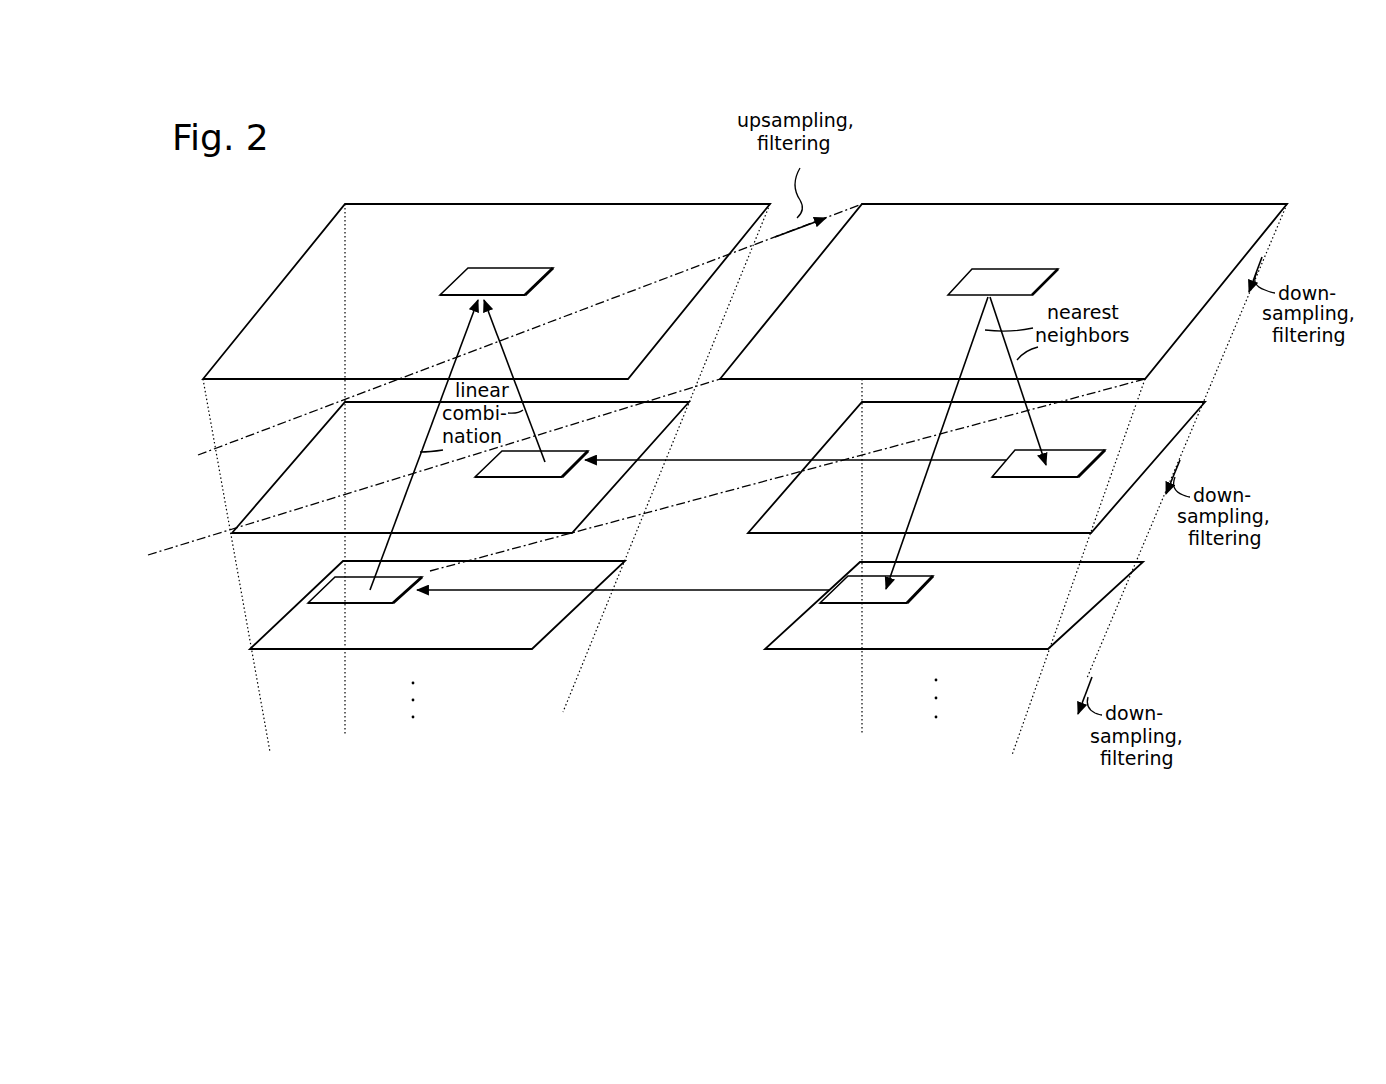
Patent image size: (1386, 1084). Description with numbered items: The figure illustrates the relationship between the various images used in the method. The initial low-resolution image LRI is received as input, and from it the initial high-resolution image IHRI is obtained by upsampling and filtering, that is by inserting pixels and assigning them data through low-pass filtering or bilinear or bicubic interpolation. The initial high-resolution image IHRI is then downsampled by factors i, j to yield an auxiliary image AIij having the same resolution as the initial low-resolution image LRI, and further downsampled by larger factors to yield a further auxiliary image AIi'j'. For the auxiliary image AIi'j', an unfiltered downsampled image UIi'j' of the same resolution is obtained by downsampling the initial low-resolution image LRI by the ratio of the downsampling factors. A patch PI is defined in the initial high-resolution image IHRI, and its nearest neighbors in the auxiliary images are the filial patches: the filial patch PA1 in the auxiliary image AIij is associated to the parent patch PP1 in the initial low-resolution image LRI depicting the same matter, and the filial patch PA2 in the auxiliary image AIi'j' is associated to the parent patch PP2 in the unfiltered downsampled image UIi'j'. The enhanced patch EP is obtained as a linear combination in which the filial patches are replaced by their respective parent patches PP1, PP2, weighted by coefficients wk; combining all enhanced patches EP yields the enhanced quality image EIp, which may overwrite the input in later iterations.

The enhanced quality image EIp is at (413, 217).
The initial high-resolution image IHRI is at (1152, 222).
The initial low-resolution image LRI is at (305, 490).
The enhanced patch EP is at (488, 272).
The patch in initial high-resolution image PI is at (997, 280).
The parent patch in initial low-resolution image PP1 is at (515, 465).
The parent patch in unfiltered downsampled image PP2 is at (380, 597).
The filial patch in auxiliary image PA1 is at (1063, 457).
The filial patch in auxiliary image PA2 is at (903, 588).
The auxiliary image AIij is at (1168, 420).
The auxiliary image AIi'j' is at (984, 605).
The unfiltered downsampled image UIi'j' is at (437, 635).
The weight coefficient wk is at (424, 445).